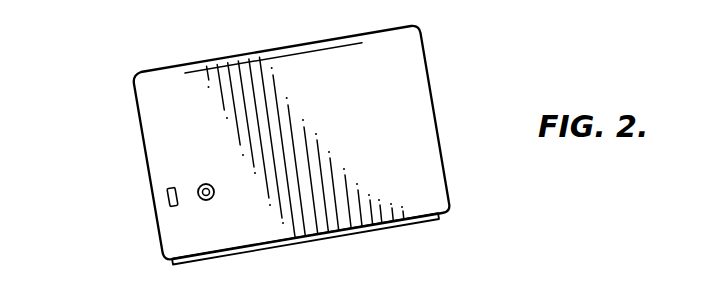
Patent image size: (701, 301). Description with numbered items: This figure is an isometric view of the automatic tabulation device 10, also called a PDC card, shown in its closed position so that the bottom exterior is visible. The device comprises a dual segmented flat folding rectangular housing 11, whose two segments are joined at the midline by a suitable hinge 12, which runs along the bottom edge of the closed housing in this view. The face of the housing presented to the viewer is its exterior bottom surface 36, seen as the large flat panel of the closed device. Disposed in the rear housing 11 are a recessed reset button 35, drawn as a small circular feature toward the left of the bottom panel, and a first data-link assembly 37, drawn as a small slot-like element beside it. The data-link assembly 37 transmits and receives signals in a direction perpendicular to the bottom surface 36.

The automatic tabulation device 10 is at (104, 107).
The housing 11 is at (438, 126).
The hinge 12 is at (328, 239).
The recessed reset button 35 is at (198, 184).
The exterior bottom surface 36 is at (398, 68).
The first data-link assembly 37 is at (166, 198).